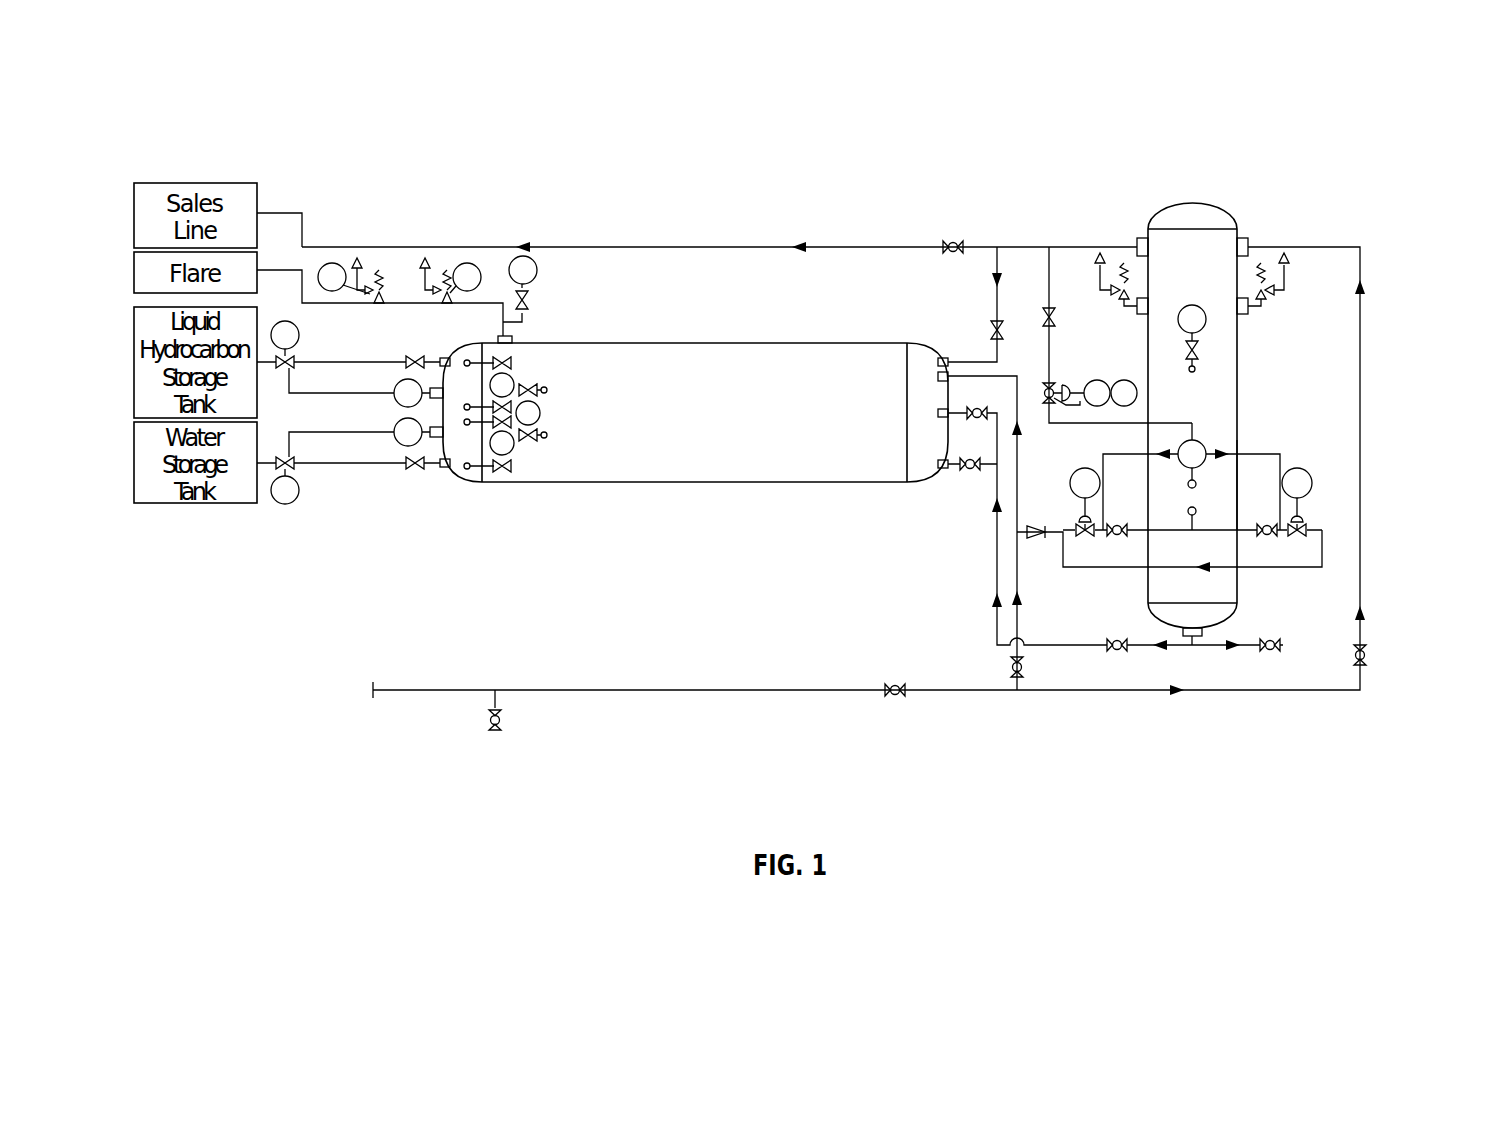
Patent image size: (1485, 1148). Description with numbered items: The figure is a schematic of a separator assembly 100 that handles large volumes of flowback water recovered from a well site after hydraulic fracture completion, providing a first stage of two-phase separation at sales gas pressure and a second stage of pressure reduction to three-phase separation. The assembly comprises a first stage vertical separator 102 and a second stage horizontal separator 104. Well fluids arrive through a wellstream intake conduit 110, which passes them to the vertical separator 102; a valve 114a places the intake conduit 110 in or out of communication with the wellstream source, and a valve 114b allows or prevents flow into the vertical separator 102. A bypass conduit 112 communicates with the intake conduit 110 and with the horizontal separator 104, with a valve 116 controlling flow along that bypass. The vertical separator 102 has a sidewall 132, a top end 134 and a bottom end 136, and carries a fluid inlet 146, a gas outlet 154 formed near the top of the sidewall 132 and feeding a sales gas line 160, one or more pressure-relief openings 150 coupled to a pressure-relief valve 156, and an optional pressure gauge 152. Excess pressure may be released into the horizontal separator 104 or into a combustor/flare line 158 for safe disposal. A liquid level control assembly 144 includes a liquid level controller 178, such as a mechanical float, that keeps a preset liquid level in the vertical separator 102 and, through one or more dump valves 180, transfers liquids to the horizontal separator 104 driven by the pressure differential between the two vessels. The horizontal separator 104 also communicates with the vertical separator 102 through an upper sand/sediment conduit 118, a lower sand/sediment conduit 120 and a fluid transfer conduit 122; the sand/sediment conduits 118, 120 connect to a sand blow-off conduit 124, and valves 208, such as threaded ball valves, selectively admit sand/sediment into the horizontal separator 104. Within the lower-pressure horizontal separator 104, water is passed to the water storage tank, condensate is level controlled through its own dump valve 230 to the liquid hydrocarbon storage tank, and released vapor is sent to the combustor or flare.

The separator assembly 100 is at (1245, 762).
The first stage vertical separator 102 is at (1208, 398).
The second stage horizontal separator 104 is at (720, 336).
The wellstream intake conduit 110 is at (1305, 246).
The bypass conduit 112 is at (1020, 610).
The valve 114a is at (893, 685).
The valve 114b is at (1368, 655).
The valve 116 is at (1012, 665).
The upper sand/sediment conduit 118 is at (993, 410).
The lower sand/sediment conduit 120 is at (991, 470).
The fluid transfer conduit 122 is at (1018, 377).
The sand blow-off conduit 124 is at (1179, 650).
The sidewall 132 is at (1238, 388).
The top end 134 is at (1222, 207).
The bottom end 136 is at (1238, 617).
The liquid level control assembly 144 is at (1284, 441).
The fluid inlet 146 is at (1246, 237).
The pressure-relief opening 150 is at (1237, 305).
The pressure gauge 152 is at (1200, 352).
The gas outlet 154 is at (1140, 237).
The pressure-relief valve 156 is at (1120, 300).
The combustor/flare line 158 is at (513, 333).
The sales gas line 160 is at (895, 246).
The liquid level controller 178 is at (1205, 442).
The dump valve 180 is at (1118, 538).
The valve 208 is at (975, 420).
The dump valve 230 is at (299, 337).